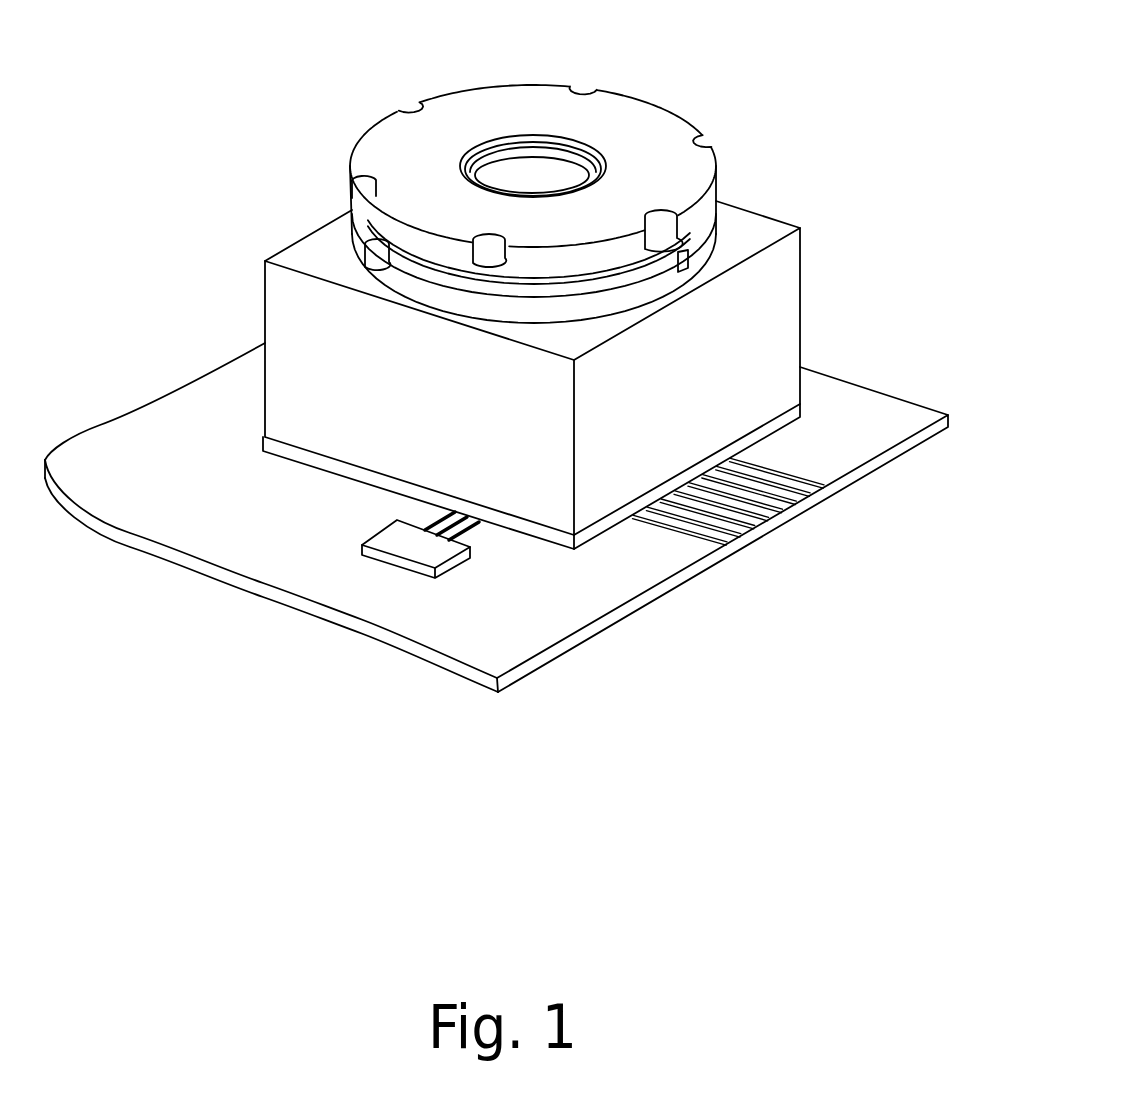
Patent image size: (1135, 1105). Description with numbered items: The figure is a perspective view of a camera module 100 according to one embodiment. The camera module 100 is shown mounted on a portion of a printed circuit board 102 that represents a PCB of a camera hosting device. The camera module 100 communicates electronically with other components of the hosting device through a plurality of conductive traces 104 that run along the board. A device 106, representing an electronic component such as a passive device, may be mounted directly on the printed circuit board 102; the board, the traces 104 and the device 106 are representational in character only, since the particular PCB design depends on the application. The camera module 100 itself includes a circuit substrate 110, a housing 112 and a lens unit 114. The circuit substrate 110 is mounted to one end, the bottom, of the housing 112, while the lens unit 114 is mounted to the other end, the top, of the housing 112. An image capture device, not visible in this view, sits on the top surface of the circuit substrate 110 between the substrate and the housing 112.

The camera module 100 is at (782, 117).
The printed circuit board 102 is at (118, 451).
The conductive traces 104 is at (790, 507).
The device 106 is at (397, 532).
The circuit substrate 110 is at (263, 435).
The housing 112 is at (292, 292).
The lens unit 114 is at (375, 142).